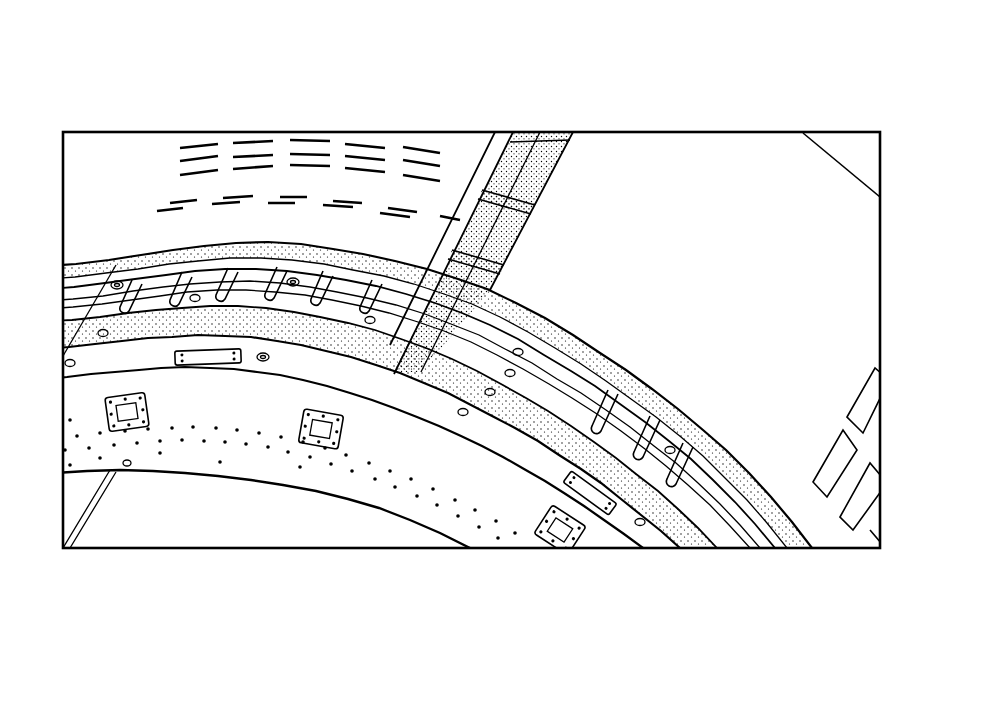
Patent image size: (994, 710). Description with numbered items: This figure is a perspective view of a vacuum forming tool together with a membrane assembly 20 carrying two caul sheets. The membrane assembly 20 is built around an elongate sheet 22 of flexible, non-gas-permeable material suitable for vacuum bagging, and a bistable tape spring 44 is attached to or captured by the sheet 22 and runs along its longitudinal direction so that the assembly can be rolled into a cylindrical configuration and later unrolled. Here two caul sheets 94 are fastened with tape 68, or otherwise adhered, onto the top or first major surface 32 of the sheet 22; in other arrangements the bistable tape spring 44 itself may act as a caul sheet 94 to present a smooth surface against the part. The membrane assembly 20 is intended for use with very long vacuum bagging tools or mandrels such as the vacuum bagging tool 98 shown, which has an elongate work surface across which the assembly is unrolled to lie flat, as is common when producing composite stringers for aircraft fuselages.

The membrane assembly 20 is at (120, 82).
The sheet 22 is at (501, 213).
The first major surface 32 is at (537, 177).
The bistable tape spring 44 is at (501, 213).
The tape 68 is at (487, 257).
The caul sheet 94 is at (343, 185).
The vacuum bagging tool 98 is at (397, 475).